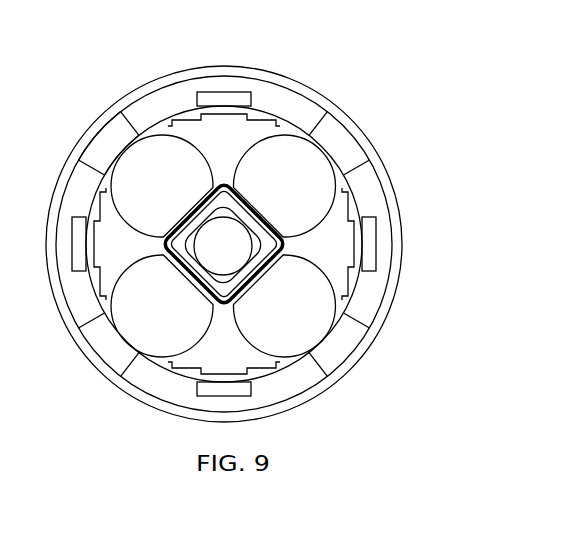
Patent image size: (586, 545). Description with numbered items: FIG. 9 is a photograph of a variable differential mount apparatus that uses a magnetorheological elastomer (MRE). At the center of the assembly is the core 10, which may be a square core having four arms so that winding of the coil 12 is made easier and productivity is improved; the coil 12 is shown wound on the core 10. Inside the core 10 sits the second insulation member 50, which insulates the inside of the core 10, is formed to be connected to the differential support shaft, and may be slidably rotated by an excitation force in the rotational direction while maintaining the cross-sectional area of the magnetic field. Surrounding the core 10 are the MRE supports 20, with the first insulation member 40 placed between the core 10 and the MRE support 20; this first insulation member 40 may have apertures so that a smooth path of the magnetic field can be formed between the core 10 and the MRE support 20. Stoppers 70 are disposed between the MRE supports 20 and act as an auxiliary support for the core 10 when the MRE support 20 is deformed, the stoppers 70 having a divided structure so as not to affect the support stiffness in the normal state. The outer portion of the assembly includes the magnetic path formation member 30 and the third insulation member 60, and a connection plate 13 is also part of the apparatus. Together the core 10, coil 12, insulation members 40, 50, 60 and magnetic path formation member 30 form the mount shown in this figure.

The core 10 is at (214, 185).
The coil 12 is at (123, 150).
The connection plate 13 is at (137, 130).
The MRE support 20 is at (311, 117).
The magnetic path formation member 30 is at (352, 126).
The first insulation member 40 is at (321, 152).
The second insulation member 50 is at (194, 245).
The third insulation member 60 is at (329, 97).
The stopper 70 is at (243, 92).